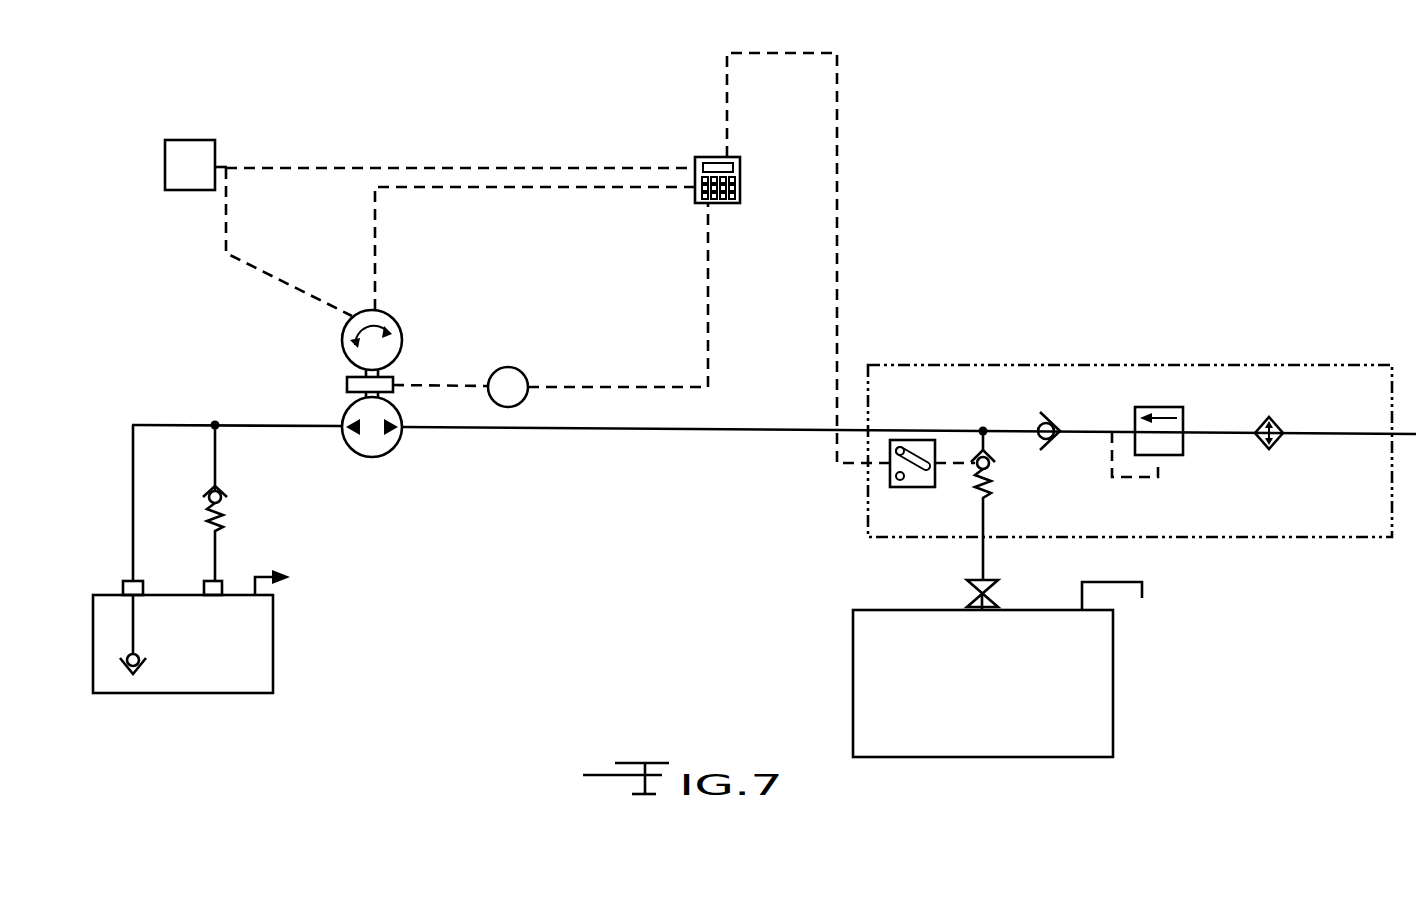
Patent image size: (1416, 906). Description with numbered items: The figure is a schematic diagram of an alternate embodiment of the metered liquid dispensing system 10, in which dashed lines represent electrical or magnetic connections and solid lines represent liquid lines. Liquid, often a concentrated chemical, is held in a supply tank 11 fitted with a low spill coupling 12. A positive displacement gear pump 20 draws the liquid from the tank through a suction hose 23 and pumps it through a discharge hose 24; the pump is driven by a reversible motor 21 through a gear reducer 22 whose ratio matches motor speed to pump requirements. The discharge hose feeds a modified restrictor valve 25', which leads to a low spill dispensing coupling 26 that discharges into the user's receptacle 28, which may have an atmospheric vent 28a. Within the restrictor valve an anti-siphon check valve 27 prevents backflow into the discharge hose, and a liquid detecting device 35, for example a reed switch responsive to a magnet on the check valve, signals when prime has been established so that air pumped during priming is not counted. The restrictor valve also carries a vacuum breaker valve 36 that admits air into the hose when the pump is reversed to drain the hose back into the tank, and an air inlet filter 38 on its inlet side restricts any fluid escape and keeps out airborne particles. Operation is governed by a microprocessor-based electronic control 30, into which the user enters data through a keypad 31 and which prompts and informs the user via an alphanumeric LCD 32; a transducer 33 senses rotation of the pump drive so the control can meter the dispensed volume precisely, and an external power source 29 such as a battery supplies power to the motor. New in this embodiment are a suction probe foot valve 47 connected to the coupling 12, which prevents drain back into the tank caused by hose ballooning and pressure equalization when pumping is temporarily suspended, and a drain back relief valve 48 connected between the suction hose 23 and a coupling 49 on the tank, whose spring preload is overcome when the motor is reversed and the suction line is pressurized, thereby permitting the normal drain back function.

The metered liquid dispensing system 10 is at (176, 112).
The supply tank 11 is at (214, 653).
The low spill coupling 12 is at (123, 585).
The gear pump 20 is at (398, 441).
The reversible motor 21 is at (397, 322).
The gear reducer 22 is at (347, 385).
The suction hose 23 is at (260, 425).
The discharge hose 24 is at (772, 429).
The modified restrictor valve 25' is at (1130, 405).
The low spill dispensing coupling 26 is at (968, 590).
The anti-siphon check valve 27 is at (990, 487).
The user's receptacle 28 is at (1001, 695).
The atmospheric vent 28a is at (1103, 582).
The external power source 29 is at (215, 148).
The electronic control 30 is at (740, 165).
The keypad 31 is at (735, 193).
The alphanumeric LCD 32 is at (718, 163).
The transducer 33 is at (518, 370).
The liquid detecting device 35 is at (905, 487).
The vacuum breaker valve 36 is at (1147, 407).
The air inlet filter 38 is at (1263, 418).
The suction probe foot valve 47 is at (125, 657).
The drain back relief valve 48 is at (222, 512).
The coupling 49 is at (225, 585).